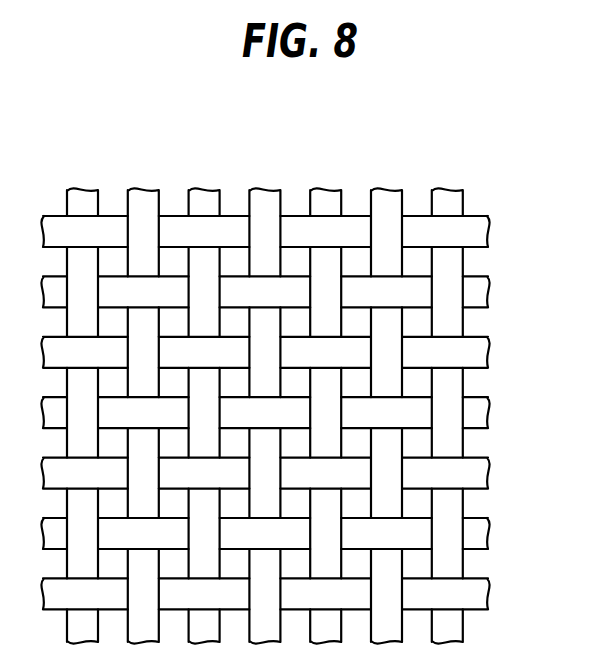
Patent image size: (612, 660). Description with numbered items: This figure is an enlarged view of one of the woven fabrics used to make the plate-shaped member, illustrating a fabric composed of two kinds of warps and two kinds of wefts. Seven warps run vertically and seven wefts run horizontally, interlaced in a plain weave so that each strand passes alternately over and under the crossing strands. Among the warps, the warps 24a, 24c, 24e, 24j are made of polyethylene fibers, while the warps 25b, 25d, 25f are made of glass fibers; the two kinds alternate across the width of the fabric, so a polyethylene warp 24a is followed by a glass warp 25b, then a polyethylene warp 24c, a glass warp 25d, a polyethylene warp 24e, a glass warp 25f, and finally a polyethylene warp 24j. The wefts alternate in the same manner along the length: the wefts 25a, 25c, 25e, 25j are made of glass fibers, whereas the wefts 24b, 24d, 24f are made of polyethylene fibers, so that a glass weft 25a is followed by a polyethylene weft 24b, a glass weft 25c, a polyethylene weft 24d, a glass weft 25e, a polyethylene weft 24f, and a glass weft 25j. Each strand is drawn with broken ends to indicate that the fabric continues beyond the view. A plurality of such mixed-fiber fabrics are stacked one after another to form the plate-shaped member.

The warp 24a is at (86, 194).
The warp 25b is at (146, 194).
The warp 24c is at (206, 194).
The warp 25d is at (272, 194).
The warp 24e is at (336, 194).
The warp 25f is at (399, 194).
The warp 24j is at (452, 194).
The weft 25a is at (483, 231).
The weft 24b is at (483, 292).
The weft 25c is at (483, 352).
The weft 24d is at (483, 413).
The weft 25e is at (483, 473).
The weft 24f is at (483, 534).
The weft 25j is at (483, 594).